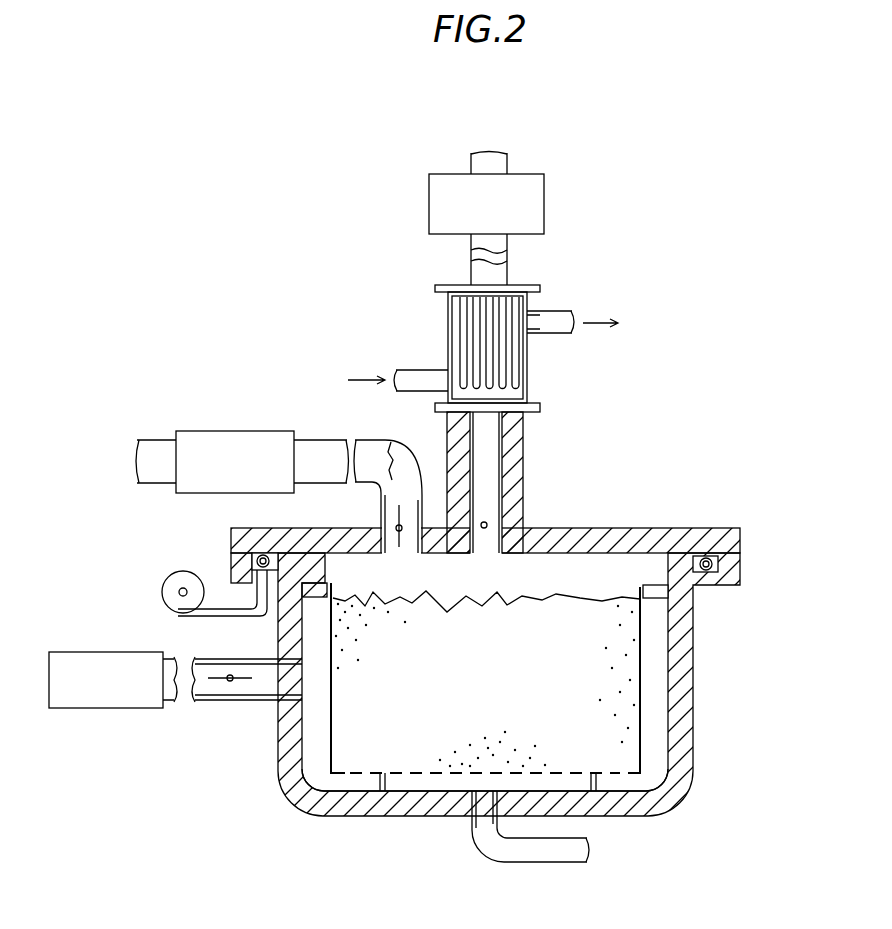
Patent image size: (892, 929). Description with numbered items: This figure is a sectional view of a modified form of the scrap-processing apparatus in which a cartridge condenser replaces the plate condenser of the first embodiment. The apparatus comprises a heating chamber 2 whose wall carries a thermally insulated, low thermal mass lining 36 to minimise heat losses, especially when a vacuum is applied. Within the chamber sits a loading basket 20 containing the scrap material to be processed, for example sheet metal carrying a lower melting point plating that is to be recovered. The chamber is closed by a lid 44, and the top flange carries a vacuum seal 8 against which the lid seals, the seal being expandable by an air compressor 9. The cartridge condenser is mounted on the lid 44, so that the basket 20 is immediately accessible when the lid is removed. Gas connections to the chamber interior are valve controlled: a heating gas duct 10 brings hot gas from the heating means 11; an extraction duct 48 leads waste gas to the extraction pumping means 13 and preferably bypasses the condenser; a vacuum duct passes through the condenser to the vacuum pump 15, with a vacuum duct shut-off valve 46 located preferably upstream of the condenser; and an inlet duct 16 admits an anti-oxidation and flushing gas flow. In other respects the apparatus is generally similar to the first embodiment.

The heating chamber 2 is at (310, 787).
The vacuum seal 8 is at (712, 561).
The air compressor 9 is at (181, 576).
The heating gas duct 10 is at (270, 681).
The heating means 11 is at (106, 680).
The extraction pumping means 13 is at (242, 462).
The vacuum pump 15 is at (483, 353).
The inlet duct 16 is at (538, 852).
The loading basket 20 is at (638, 707).
The lining 36 is at (677, 789).
The lid 44 is at (632, 541).
The vacuum duct shut-off valve 46 is at (487, 524).
The extraction duct 48 is at (330, 452).